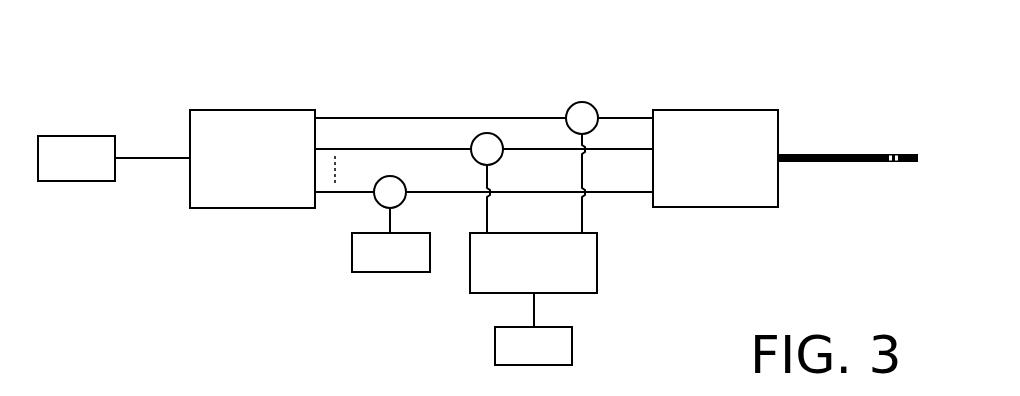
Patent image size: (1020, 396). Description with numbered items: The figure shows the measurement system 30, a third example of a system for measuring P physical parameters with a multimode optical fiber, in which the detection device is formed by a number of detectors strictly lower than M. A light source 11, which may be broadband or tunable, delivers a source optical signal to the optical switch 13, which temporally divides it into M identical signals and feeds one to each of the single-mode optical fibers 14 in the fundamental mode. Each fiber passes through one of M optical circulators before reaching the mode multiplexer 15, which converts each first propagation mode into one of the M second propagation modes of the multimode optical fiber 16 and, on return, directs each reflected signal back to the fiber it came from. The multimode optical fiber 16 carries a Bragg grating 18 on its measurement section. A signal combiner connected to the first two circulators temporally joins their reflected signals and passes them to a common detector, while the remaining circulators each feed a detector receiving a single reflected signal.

The measurement system 30 is at (94, 61).
The light source 11 is at (82, 179).
The optical switch 13 is at (222, 206).
The single-mode optical fibers 14 is at (356, 117).
The mode multiplexer/demultiplexer 15 is at (737, 203).
The multimode optical fiber 16 is at (803, 165).
The Bragg grating 18 is at (893, 167).